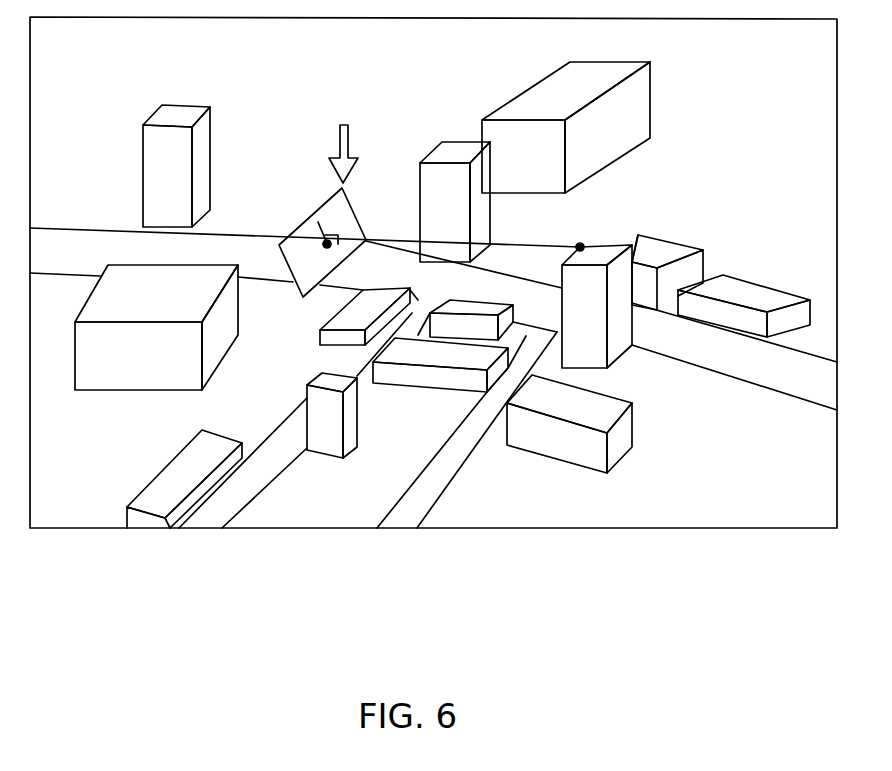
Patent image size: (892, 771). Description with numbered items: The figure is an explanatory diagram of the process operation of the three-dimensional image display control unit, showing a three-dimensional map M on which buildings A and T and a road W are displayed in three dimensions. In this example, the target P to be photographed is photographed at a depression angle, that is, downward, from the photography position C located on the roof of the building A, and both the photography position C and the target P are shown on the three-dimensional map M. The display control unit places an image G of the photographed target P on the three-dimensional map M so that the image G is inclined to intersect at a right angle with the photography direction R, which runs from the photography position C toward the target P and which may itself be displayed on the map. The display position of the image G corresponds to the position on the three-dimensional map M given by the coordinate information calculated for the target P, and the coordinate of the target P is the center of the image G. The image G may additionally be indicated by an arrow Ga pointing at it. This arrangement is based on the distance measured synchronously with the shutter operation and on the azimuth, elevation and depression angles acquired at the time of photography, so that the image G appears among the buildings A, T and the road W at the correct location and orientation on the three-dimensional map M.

The building T is at (185, 104).
The road W is at (88, 245).
The photography direction R is at (510, 248).
The photography position C is at (582, 243).
The building A is at (618, 343).
The image G is at (313, 214).
The arrow Ga is at (343, 140).
The target to be photographed P is at (325, 248).
The three-dimensional map M is at (530, 530).